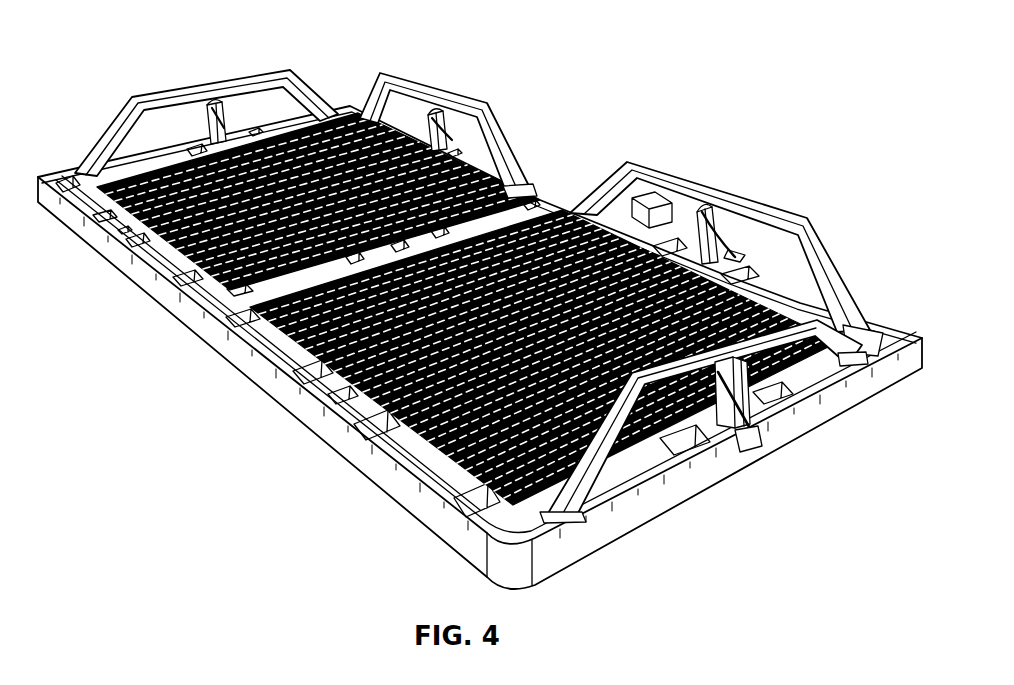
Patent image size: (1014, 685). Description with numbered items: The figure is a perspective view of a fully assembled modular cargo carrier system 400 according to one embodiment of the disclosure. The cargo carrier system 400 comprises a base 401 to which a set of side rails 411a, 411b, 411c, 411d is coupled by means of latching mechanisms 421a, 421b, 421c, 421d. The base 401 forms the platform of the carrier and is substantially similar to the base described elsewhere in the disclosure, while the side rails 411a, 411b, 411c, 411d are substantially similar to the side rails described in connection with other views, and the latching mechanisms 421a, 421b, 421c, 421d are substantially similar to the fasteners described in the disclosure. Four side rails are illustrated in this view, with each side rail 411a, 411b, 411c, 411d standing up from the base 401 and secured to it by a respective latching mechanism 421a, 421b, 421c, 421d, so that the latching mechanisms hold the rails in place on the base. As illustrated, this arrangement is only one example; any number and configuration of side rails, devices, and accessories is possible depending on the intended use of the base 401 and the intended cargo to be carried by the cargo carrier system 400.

The cargo carrier system 400 is at (712, 71).
The base 401 is at (845, 403).
The side rail 411a is at (585, 492).
The side rail 411b is at (832, 252).
The side rail 411c is at (404, 72).
The side rail 411d is at (233, 78).
The latching mechanism 421a is at (762, 443).
The latching mechanism 421b is at (728, 222).
The latching mechanism 421c is at (440, 118).
The latching mechanism 421d is at (202, 130).